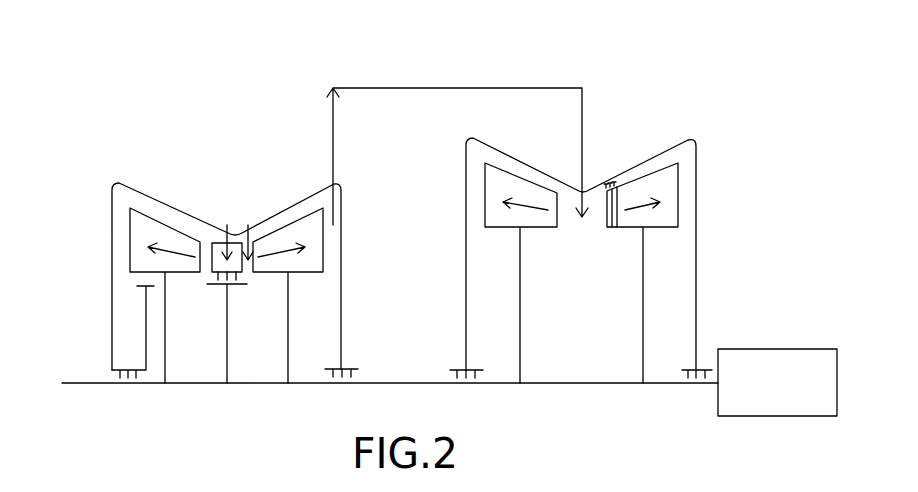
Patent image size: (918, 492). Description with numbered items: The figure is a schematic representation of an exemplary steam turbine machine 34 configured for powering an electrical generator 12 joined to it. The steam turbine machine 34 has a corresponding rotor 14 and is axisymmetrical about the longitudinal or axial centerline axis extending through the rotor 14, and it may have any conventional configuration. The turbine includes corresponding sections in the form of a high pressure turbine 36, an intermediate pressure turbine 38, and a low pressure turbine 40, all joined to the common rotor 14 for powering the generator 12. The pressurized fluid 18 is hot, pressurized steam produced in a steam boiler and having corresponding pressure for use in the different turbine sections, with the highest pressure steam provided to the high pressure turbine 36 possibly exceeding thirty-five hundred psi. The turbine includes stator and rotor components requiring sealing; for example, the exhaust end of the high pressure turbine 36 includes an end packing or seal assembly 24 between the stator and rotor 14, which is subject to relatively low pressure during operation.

The electrical generator 12 is at (765, 394).
The rotor 14 is at (665, 383).
The pressurized fluid 18 is at (225, 235).
The end packing or seal assembly 24 is at (97, 379).
The steam turbine machine 34 is at (235, 216).
The high pressure turbine 36 is at (163, 215).
The intermediate pressure turbine 38 is at (288, 270).
The low pressure turbine 40 is at (630, 182).